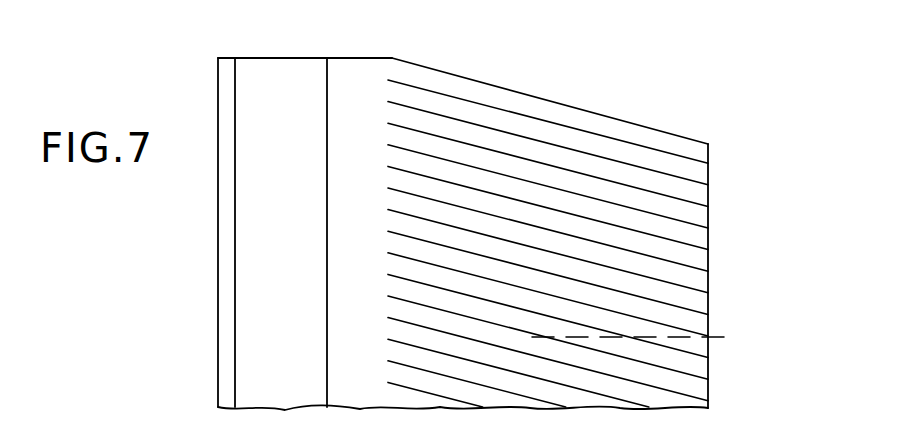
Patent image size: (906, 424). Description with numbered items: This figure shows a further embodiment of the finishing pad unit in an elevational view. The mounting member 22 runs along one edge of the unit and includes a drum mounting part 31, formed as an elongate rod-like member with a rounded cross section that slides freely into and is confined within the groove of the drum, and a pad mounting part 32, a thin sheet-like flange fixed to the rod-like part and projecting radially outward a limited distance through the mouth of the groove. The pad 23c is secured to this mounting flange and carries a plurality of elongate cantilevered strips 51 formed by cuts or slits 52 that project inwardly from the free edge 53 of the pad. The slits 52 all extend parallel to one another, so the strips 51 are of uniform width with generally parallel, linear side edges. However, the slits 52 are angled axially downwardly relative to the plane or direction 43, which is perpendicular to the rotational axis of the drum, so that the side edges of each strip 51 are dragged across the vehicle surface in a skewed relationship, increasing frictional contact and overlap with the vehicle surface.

The mounting member 22 is at (262, 58).
The pad 23c is at (393, 58).
The drum mounting part 31 is at (224, 217).
The pad mounting part 32 is at (249, 290).
The cantilevered strips 51 is at (458, 108).
The slits 52 is at (561, 146).
The free edge 53 is at (710, 200).
The plane or direction 43 is at (718, 338).